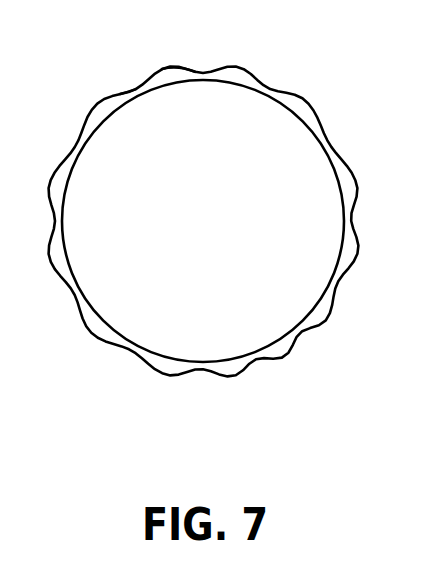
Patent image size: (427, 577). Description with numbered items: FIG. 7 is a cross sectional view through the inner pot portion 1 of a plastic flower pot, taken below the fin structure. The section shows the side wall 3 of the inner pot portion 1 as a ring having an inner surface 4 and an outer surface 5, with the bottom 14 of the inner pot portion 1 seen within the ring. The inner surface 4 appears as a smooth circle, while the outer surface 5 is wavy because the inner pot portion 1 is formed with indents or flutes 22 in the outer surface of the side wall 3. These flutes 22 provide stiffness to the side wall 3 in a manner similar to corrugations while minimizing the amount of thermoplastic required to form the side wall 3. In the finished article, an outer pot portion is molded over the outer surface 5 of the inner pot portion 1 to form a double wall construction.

The inner pot portion 1 is at (77, 341).
The side wall 3 is at (177, 71).
The inner surface 4 is at (67, 187).
The outer surface 5 is at (86, 105).
The bottom 14 is at (228, 243).
The flutes 22 is at (130, 89).